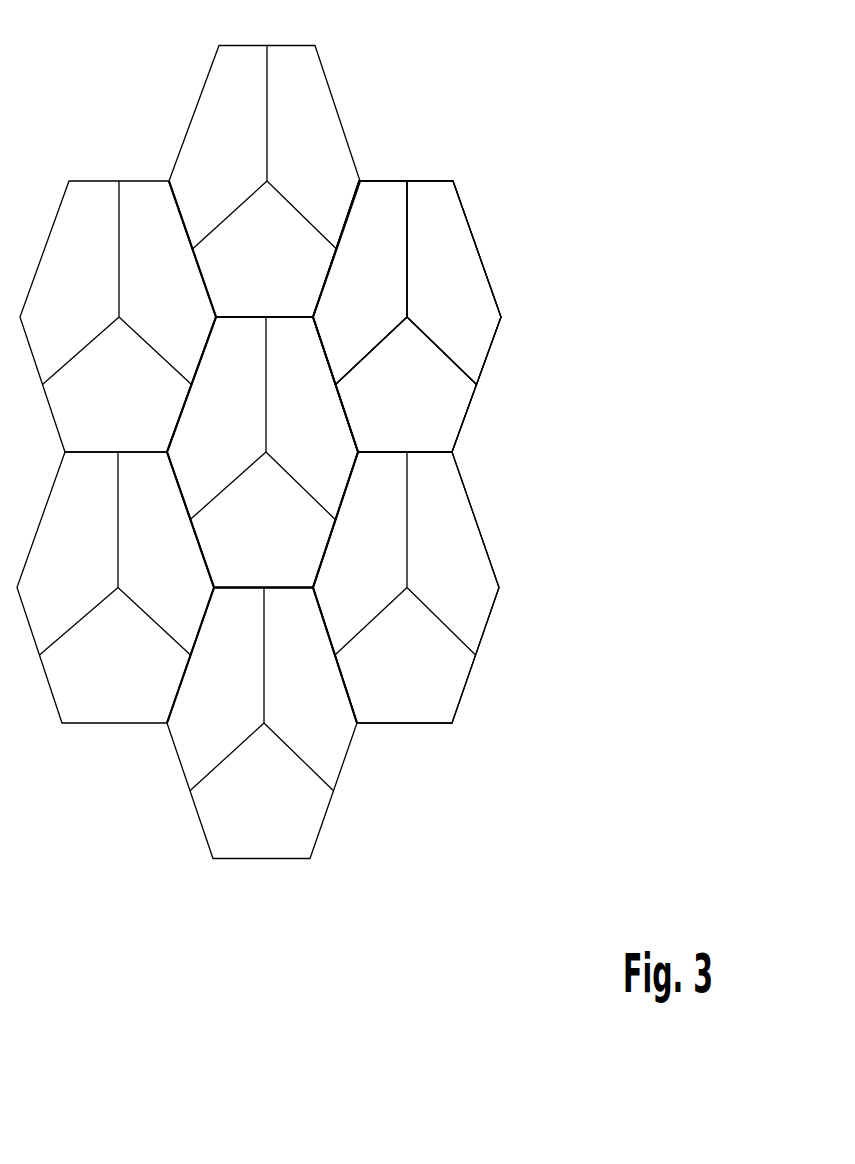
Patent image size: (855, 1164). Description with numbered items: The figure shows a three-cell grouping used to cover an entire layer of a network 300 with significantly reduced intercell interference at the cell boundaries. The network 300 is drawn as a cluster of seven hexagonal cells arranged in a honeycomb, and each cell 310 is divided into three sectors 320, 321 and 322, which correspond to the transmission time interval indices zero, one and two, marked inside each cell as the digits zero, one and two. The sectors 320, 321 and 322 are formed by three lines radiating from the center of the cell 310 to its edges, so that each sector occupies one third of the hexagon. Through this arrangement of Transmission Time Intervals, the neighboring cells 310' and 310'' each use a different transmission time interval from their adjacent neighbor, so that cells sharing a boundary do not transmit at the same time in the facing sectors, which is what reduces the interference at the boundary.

The network 300 is at (389, 67).
The cell 310 is at (414, 316).
The neighboring cell 310' is at (413, 587).
The neighboring cell 310'' is at (262, 423).
The sector 320 is at (361, 238).
The sector 321 is at (414, 238).
The sector 322 is at (412, 433).